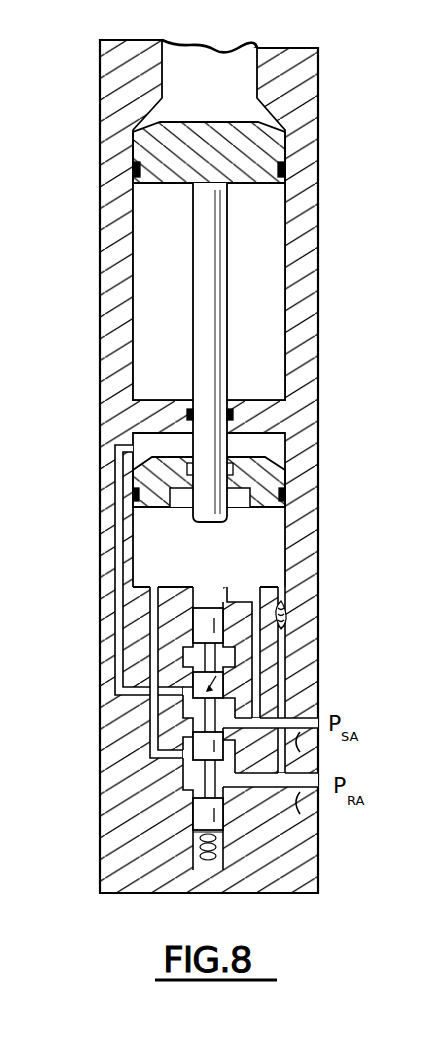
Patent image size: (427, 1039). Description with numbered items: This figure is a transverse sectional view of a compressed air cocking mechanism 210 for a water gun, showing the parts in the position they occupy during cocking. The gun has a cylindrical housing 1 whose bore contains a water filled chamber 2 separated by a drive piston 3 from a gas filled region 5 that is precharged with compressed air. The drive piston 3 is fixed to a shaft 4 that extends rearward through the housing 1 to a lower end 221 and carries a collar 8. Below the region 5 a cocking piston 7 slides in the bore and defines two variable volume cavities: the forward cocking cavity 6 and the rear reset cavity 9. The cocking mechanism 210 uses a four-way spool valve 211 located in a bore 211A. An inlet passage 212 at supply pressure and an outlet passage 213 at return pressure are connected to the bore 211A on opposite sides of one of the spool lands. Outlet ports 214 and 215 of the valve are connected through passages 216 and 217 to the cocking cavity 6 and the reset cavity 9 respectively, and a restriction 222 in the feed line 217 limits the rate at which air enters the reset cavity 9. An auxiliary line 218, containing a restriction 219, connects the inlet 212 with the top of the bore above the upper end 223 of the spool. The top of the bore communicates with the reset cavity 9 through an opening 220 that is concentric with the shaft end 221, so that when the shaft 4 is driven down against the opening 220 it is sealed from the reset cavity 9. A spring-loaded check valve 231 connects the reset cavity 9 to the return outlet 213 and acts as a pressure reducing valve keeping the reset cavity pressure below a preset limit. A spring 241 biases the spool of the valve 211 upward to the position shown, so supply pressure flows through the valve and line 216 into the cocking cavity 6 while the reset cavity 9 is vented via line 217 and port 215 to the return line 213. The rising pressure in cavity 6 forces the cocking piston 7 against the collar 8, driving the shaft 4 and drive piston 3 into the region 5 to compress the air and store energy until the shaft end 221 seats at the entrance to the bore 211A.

The cylindrical housing 1 is at (101, 78).
The water filled chamber 2 is at (193, 58).
The drive piston 3 is at (250, 168).
The shaft 4 is at (216, 265).
The gas filled region 5 is at (273, 316).
The cocking cavity 6 is at (275, 440).
The cocking piston 7 is at (280, 478).
The collar 8 is at (232, 509).
The reset cavity 9 is at (273, 528).
The cocking mechanism 210 is at (211, 739).
The four-way spool valve 211 is at (286, 704).
The bore 211A is at (120, 604).
The inlet passage 212 is at (300, 746).
The outlet passage 213 is at (300, 805).
The outlet port 214 is at (183, 712).
The outlet port 215 is at (198, 788).
The passage 216 is at (154, 688).
The passage 217 is at (194, 762).
The auxiliary line 218 is at (223, 686).
The restriction 219 is at (284, 580).
The opening 220 is at (206, 600).
The lower end of the shaft 221 is at (197, 520).
The restriction 222 is at (120, 640).
The upper end of the spool 223 is at (222, 594).
The spring-loaded check valve 231 is at (286, 620).
The spring 241 is at (193, 853).